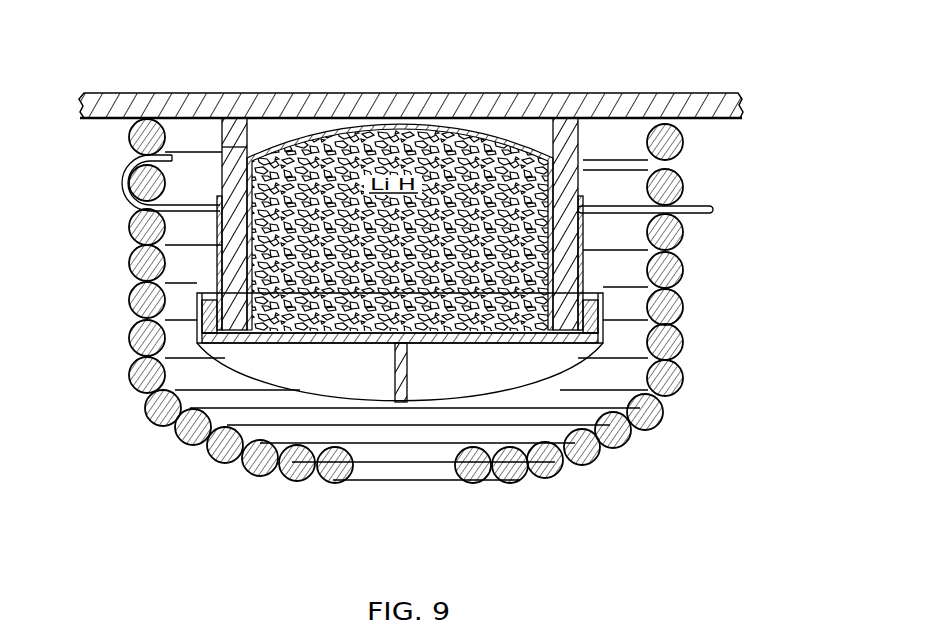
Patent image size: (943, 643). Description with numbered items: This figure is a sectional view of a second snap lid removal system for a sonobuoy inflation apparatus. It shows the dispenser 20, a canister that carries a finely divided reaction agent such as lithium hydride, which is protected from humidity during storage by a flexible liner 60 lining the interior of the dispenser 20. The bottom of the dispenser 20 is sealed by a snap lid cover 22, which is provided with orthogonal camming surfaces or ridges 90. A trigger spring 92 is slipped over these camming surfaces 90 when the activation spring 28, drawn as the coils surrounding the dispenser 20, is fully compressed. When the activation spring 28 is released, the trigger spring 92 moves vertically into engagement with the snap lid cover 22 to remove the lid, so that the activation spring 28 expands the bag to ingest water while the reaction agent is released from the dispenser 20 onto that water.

The dispenser 20 is at (597, 119).
The flexible liner 60 is at (500, 150).
The trigger spring 92 is at (697, 205).
The activation spring 28 is at (683, 268).
The camming surfaces 90 is at (407, 370).
The snap lid cover 22 is at (402, 403).